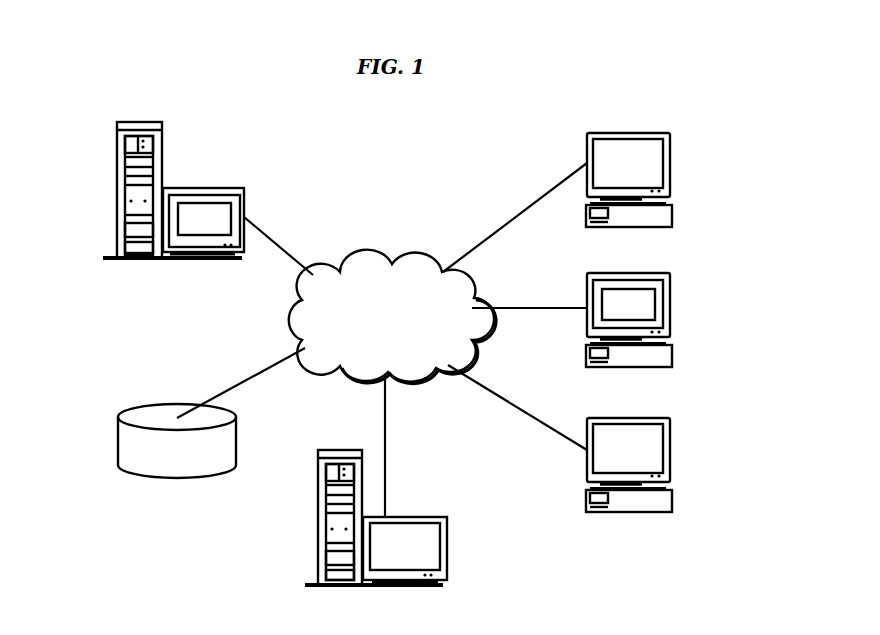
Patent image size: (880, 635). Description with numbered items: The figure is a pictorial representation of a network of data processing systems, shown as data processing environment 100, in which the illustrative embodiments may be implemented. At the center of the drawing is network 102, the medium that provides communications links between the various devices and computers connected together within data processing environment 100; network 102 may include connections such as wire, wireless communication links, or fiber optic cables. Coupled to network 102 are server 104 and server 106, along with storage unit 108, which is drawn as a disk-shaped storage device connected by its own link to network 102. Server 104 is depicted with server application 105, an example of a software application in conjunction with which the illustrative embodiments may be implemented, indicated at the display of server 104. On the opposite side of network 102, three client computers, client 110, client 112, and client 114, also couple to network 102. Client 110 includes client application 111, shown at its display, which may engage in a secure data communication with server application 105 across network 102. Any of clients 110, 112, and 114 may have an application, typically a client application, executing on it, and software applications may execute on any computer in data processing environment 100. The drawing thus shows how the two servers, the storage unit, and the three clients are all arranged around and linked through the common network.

The data processing environment 100 is at (66, 142).
The network 102 is at (392, 317).
The server 104 is at (189, 201).
The server application 105 is at (193, 203).
The server 106 is at (376, 530).
The storage unit 108 is at (177, 441).
The client 110 is at (682, 329).
The client application 111 is at (656, 304).
The client 112 is at (629, 474).
The client 114 is at (629, 189).